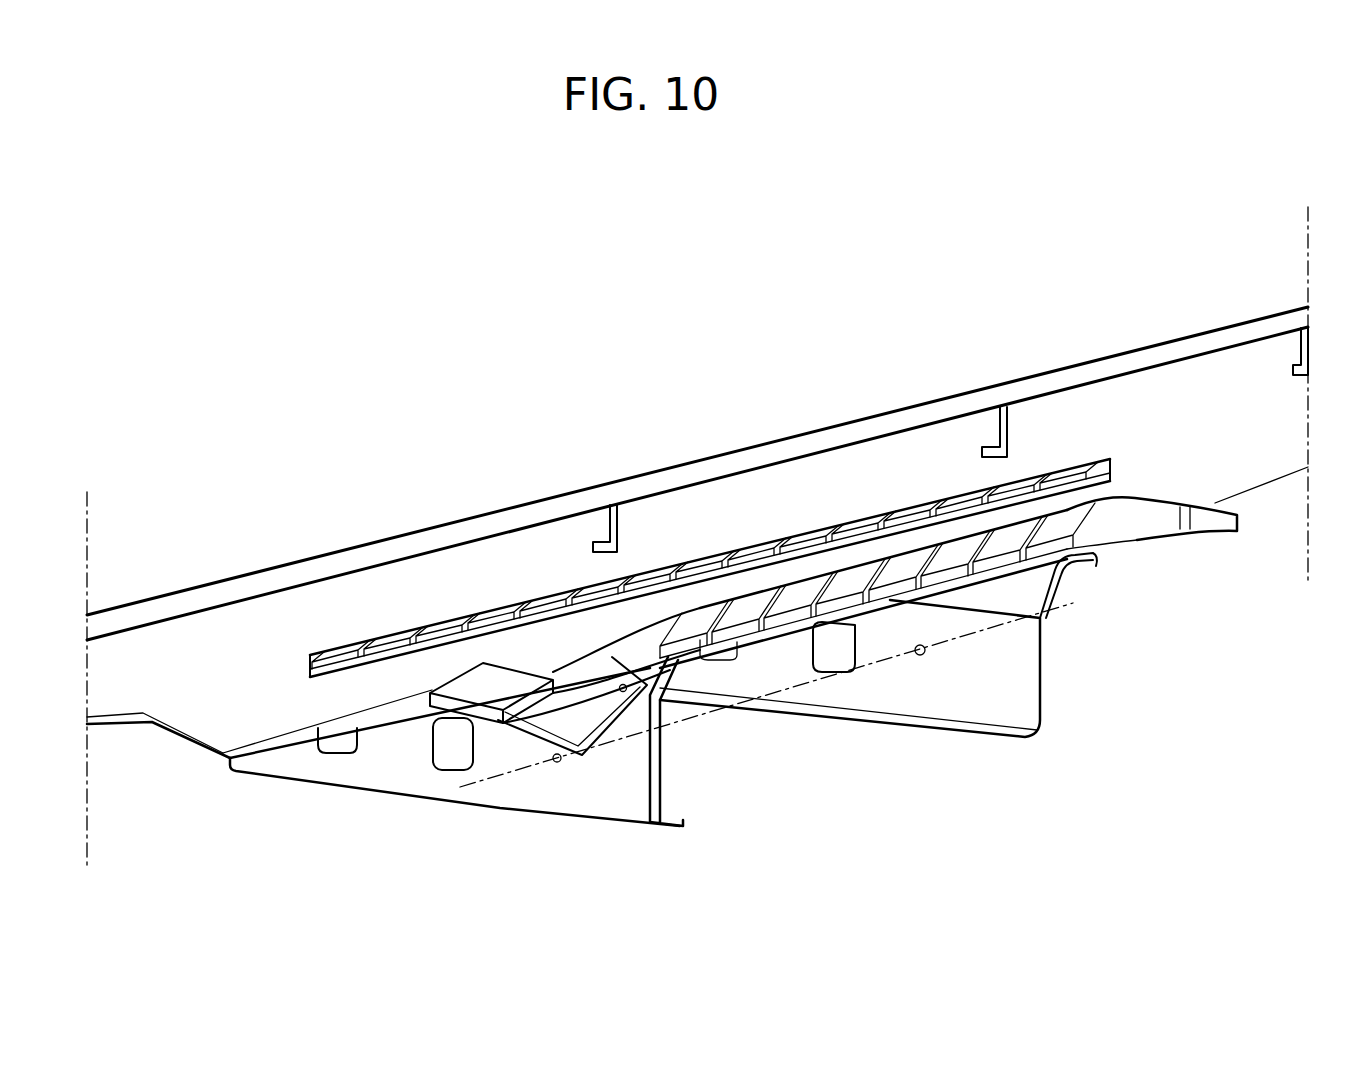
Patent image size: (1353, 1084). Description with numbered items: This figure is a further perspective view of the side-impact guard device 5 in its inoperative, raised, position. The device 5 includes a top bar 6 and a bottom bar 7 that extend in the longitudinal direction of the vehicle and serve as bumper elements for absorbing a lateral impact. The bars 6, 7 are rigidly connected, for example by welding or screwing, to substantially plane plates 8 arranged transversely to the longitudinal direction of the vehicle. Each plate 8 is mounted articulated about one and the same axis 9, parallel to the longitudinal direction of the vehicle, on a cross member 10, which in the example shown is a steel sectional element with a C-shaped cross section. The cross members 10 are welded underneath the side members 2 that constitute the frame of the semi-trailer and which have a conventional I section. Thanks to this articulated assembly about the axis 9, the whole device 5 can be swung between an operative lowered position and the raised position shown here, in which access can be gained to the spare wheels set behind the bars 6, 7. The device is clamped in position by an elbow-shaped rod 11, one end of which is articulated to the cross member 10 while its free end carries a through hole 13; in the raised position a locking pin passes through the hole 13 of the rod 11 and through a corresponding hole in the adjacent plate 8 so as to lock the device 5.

The side member 2 is at (198, 638).
The side-impact guard device 5 is at (898, 800).
The top bar 6 is at (345, 652).
The bottom bar 7 is at (1143, 497).
The plate 8 is at (540, 793).
The axis 9 is at (703, 713).
The cross member 10 is at (345, 755).
The elbow-shaped rod 11 is at (603, 740).
The through hole 13 is at (628, 697).